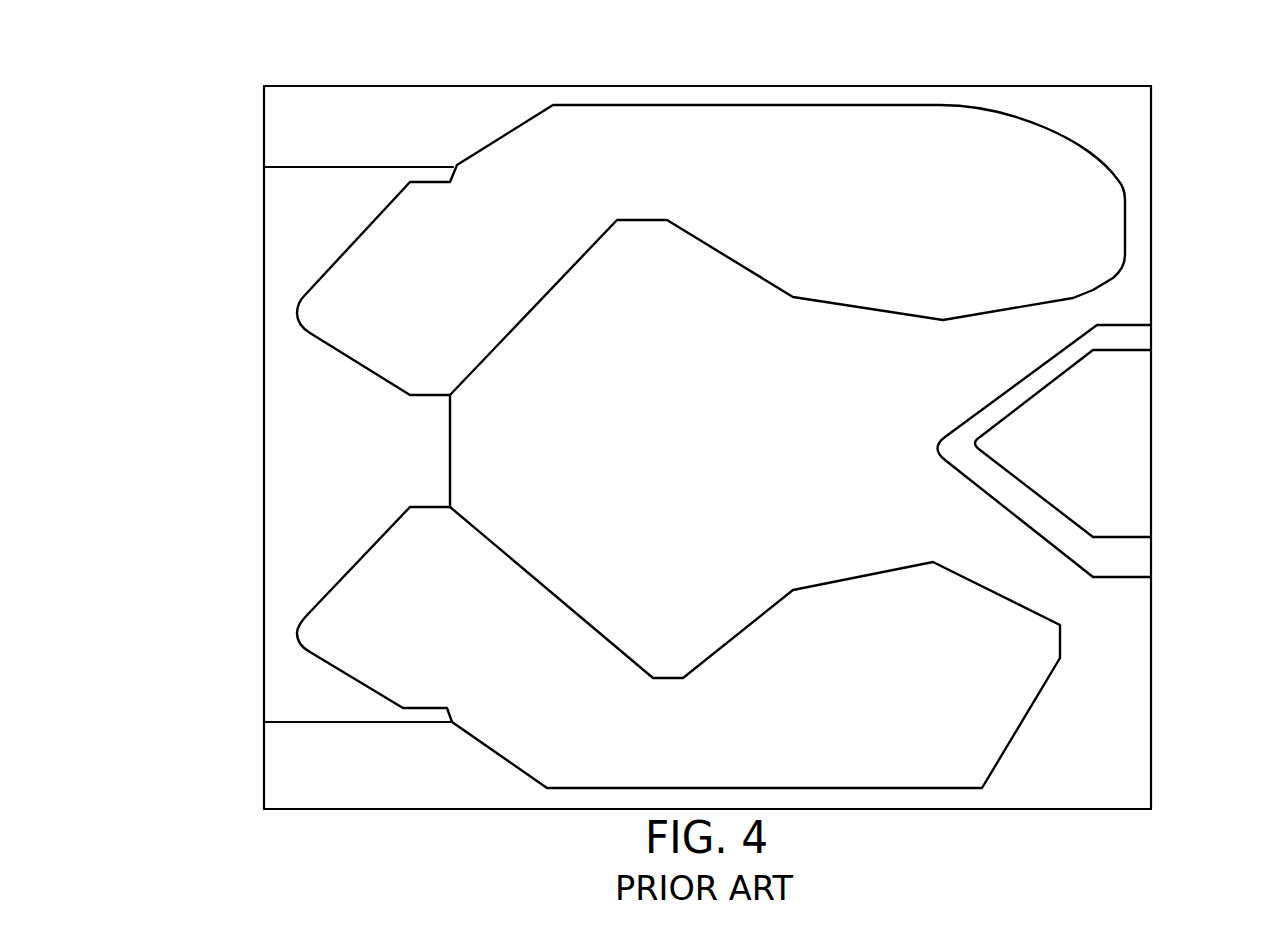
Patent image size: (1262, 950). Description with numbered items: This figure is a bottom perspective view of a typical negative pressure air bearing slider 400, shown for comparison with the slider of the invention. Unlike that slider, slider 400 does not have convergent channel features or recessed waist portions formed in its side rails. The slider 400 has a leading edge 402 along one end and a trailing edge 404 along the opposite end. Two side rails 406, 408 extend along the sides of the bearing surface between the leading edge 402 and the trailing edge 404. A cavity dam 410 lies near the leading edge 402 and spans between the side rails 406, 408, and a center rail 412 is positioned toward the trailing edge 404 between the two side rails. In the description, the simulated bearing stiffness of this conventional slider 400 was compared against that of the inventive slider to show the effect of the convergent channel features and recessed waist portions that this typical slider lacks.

The negative pressure air bearing slider 400 is at (228, 130).
The leading edge 402 is at (262, 472).
The trailing edge 404 is at (1152, 253).
The side rail 406 is at (672, 137).
The side rail 408 is at (600, 763).
The cavity dam 410 is at (407, 447).
The center rail 412 is at (942, 477).